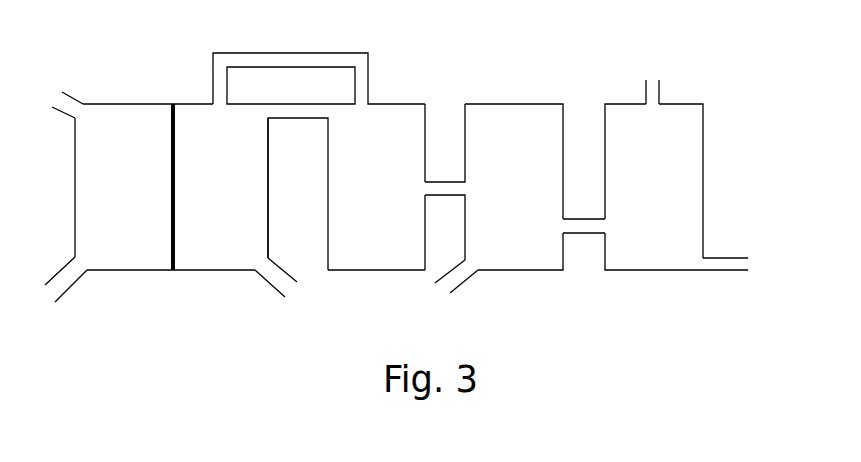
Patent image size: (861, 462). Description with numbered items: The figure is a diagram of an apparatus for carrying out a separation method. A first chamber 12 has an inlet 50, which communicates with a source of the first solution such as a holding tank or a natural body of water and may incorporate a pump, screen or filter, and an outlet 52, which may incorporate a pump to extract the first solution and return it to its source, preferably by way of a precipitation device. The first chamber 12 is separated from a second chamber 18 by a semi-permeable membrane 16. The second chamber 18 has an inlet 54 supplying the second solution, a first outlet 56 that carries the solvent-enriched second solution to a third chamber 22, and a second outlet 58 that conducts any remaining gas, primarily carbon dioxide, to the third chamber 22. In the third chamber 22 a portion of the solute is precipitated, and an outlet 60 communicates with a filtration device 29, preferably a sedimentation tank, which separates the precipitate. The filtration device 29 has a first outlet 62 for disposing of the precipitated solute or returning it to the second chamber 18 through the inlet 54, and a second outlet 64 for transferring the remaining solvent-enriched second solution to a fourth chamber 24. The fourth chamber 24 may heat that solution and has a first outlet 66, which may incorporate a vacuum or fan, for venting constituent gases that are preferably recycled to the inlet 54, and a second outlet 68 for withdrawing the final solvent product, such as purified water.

The first chamber 12 is at (137, 186).
The semi-permeable membrane 16 is at (172, 103).
The second chamber 18 is at (230, 186).
The third chamber 22 is at (380, 186).
The fourth chamber 24 is at (670, 186).
The filtration device 29 is at (523, 186).
The inlet 50 is at (68, 93).
The outlet 52 is at (73, 285).
The inlet 54 is at (265, 282).
The first outlet 56 is at (315, 119).
The second outlet 58 is at (292, 52).
The outlet 60 is at (432, 180).
The first outlet 62 is at (462, 285).
The second outlet 64 is at (572, 218).
The first outlet 66 is at (646, 93).
The second outlet 68 is at (715, 272).